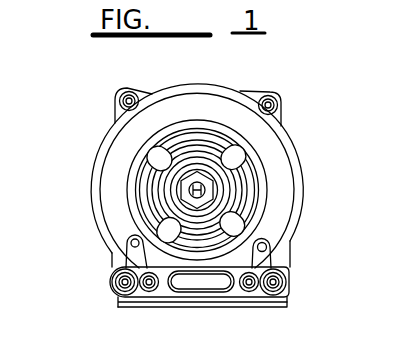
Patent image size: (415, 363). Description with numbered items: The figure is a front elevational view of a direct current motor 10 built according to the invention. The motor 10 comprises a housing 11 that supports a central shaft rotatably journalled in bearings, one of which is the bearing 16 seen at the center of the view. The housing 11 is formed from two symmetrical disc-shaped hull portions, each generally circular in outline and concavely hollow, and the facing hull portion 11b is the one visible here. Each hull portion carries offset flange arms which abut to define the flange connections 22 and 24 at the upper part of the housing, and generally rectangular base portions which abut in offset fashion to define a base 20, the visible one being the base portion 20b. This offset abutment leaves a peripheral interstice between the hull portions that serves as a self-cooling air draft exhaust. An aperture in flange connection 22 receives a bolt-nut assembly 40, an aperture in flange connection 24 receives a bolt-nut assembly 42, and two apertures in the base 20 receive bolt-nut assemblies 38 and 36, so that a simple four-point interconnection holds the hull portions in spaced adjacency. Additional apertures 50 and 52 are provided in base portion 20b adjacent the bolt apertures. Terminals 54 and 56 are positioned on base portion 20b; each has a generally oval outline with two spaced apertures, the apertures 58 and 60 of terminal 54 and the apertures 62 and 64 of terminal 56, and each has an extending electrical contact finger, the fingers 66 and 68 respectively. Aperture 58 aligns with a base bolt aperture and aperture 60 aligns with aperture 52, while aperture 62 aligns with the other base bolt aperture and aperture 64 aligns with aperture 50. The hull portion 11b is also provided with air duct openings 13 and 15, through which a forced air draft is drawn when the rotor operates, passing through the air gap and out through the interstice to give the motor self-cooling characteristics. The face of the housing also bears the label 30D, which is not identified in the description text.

The direct current motor 10 is at (318, 155).
The housing 11 is at (298, 206).
The hull portion 11b is at (110, 165).
The air duct opening 13 is at (234, 158).
The air duct opening 15 is at (156, 150).
The bearing 16 is at (181, 190).
The base 20 is at (167, 292).
The base portion 20b is at (232, 298).
The flange connection 22 is at (153, 91).
The flange connection 24 is at (259, 95).
The face plate 30D is at (247, 189).
The bolt-nut assembly 36 is at (286, 283).
The bolt-nut assembly 38 is at (118, 287).
The bolt-nut assembly 40 is at (118, 101).
The bolt-nut assembly 42 is at (281, 103).
The aperture 50 is at (148, 292).
The aperture 52 is at (255, 292).
The terminal 54 is at (272, 266).
The terminal 56 is at (128, 266).
The aperture 58 is at (284, 303).
The aperture 60 is at (201, 282).
The aperture 62 is at (113, 282).
The aperture 64 is at (201, 281).
The electrical contact finger 66 is at (268, 246).
The electrical contact finger 68 is at (135, 240).